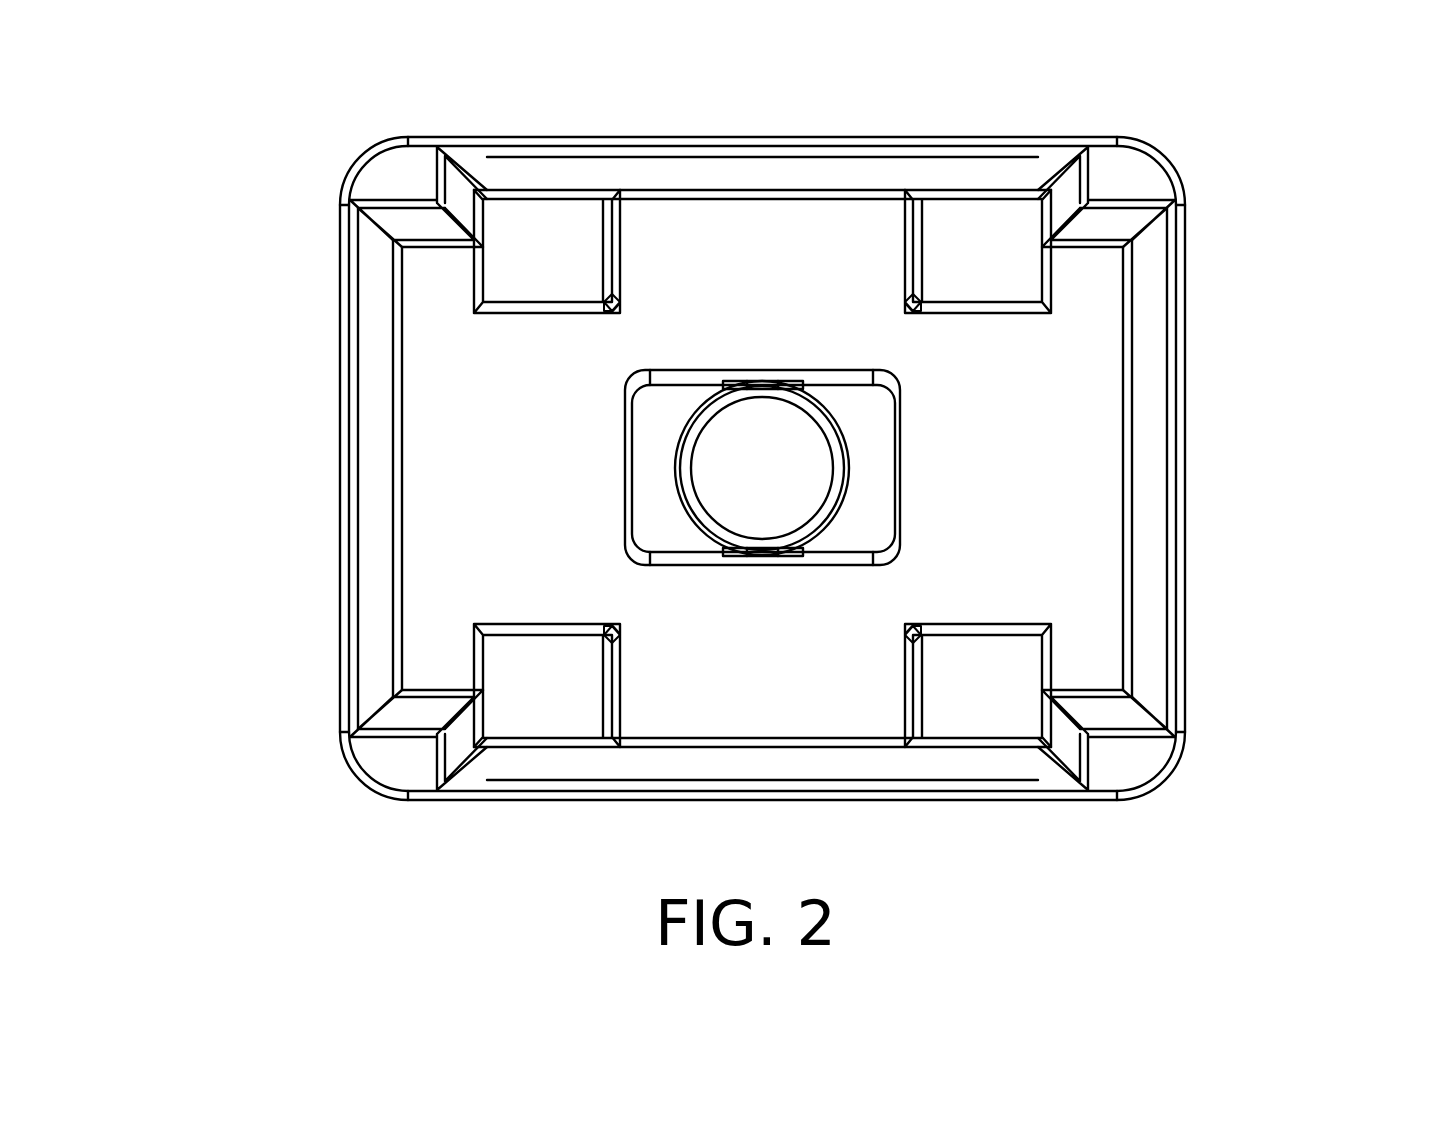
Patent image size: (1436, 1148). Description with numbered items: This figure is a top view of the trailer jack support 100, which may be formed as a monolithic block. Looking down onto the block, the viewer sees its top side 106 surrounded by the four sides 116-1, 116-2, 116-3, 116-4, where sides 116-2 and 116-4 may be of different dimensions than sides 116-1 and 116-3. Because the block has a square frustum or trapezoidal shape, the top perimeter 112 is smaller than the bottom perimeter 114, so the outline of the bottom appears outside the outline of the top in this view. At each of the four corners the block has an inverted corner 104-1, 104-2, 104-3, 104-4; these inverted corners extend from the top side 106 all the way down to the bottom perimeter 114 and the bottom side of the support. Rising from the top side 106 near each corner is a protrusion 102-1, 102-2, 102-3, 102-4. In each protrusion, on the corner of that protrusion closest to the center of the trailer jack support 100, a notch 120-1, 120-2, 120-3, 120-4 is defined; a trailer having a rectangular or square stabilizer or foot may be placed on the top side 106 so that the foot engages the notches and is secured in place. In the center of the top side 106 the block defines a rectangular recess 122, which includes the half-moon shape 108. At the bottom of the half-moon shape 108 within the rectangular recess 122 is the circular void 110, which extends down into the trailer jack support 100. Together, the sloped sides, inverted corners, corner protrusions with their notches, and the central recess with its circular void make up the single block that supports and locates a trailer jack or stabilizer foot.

The trailer jack support 100 is at (148, 90).
The protrusion 102-1 is at (553, 263).
The protrusion 102-2 is at (977, 262).
The protrusion 102-3 is at (960, 695).
The protrusion 102-4 is at (555, 689).
The inverted corner 104-1 is at (398, 191).
The inverted corner 104-2 is at (1122, 190).
The inverted corner 104-3 is at (1142, 760).
The inverted corner 104-4 is at (408, 750).
The top side 106 is at (440, 357).
The half-moon shape 108 is at (875, 553).
The circular void 110 is at (767, 478).
The top perimeter 112 is at (830, 735).
The bottom perimeter 114 is at (635, 771).
The side 116-1 is at (380, 572).
The side 116-2 is at (797, 183).
The side 116-3 is at (1155, 360).
The side 116-4 is at (927, 757).
The notch 120-1 is at (605, 298).
The notch 120-2 is at (923, 297).
The notch 120-3 is at (923, 640).
The notch 120-4 is at (607, 623).
The rectangular recess 122 is at (875, 478).